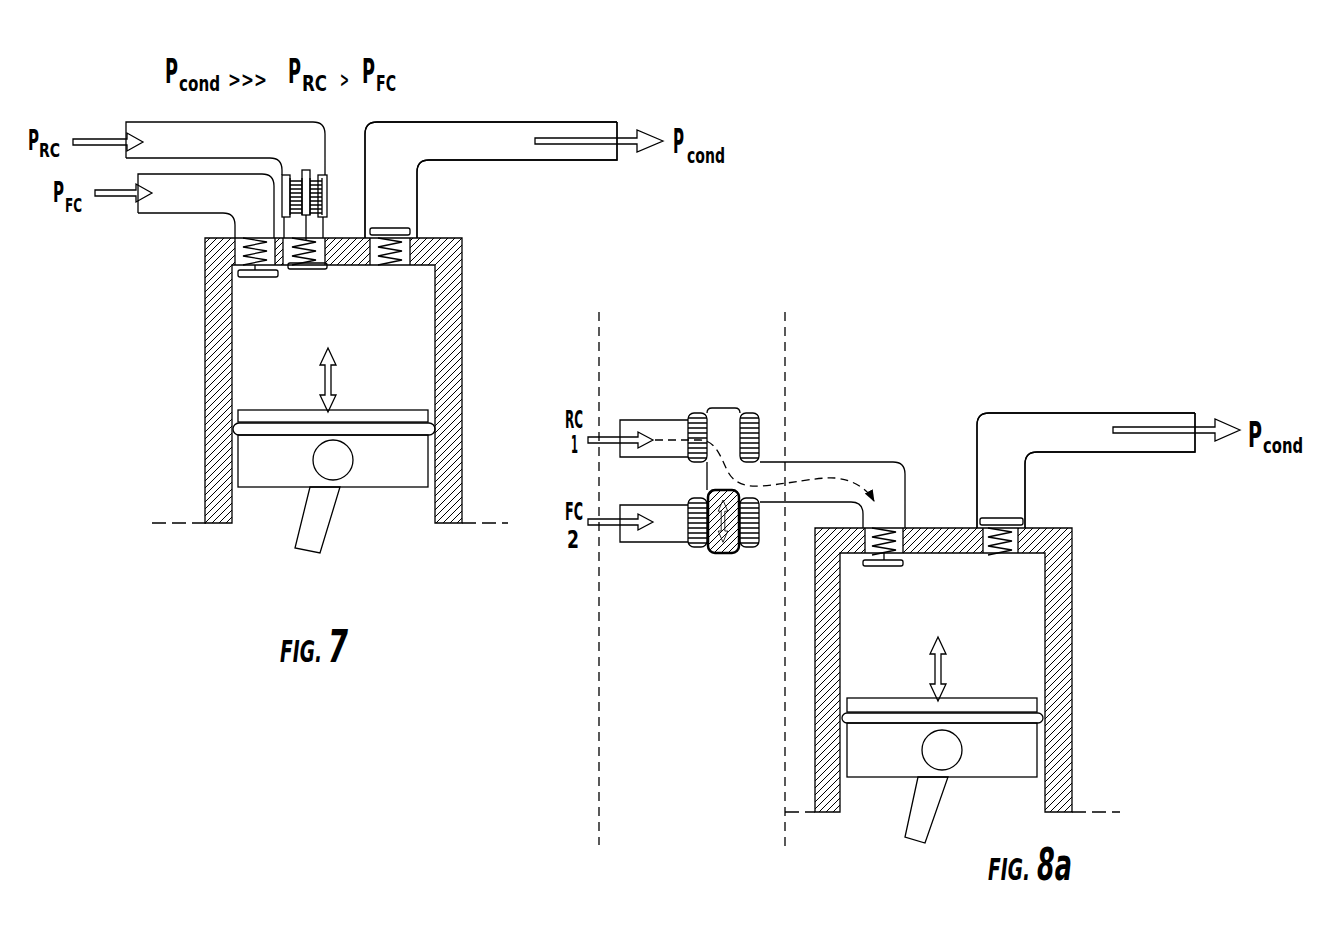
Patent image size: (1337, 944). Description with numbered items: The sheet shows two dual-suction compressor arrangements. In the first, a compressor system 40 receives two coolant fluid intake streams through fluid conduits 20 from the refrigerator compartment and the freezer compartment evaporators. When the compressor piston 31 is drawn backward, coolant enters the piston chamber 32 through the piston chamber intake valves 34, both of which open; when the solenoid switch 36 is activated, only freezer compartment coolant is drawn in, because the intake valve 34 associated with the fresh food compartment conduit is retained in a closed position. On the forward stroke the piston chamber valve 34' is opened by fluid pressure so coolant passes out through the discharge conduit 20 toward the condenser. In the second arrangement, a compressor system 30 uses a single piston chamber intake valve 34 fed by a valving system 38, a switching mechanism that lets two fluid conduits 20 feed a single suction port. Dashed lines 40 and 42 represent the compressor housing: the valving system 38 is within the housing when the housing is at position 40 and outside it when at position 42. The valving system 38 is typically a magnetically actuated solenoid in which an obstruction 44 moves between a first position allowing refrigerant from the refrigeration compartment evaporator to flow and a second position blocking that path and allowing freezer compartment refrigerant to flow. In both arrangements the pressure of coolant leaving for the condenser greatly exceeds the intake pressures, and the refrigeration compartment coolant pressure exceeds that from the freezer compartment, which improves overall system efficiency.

In FIG. 7, the fluid conduit 20 is at (167, 138).
In FIG. 8a, the fluid conduit 20 is at (667, 427).
In FIG. 8a, the compressor system 30 is at (975, 313).
In FIG. 7, the compressor piston 31 is at (272, 475).
In FIG. 8a, the compressor piston 31 is at (883, 763).
In FIG. 7, the piston chamber 32 is at (267, 335).
In FIG. 8a, the piston chamber 32 is at (1015, 597).
In FIG. 7, the piston chamber intake valve 34 is at (232, 298).
In FIG. 8a, the piston chamber intake valve 34 is at (822, 587).
In FIG. 7, the piston chamber valve 34' is at (431, 226).
In FIG. 8a, the piston chamber valve 34' is at (1056, 522).
In FIG. 7, the solenoid switch 36 is at (333, 183).
In FIG. 8a, the valving system 38 is at (664, 374).
In FIG. 7, the housing position line 40 is at (495, 78).
In FIG. 8a, the housing position line 40 is at (600, 332).
In FIG. 8a, the housing position line 42 is at (785, 333).
In FIG. 8a, the obstruction 44 is at (723, 557).